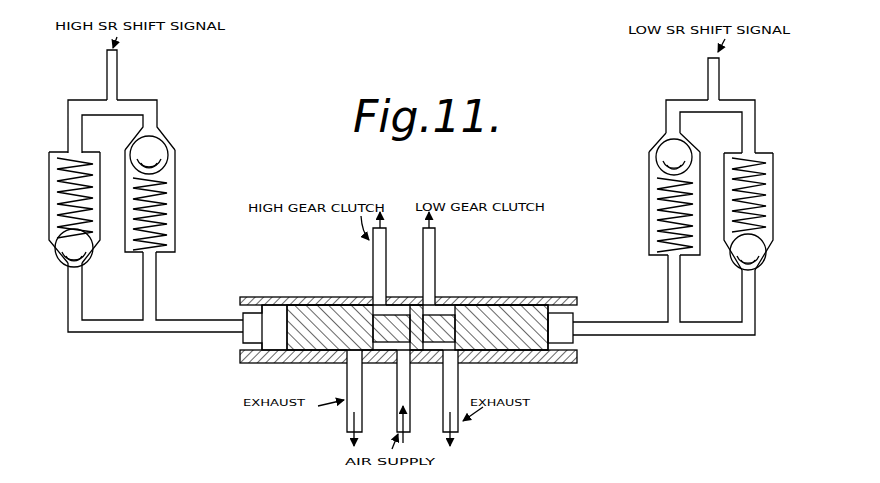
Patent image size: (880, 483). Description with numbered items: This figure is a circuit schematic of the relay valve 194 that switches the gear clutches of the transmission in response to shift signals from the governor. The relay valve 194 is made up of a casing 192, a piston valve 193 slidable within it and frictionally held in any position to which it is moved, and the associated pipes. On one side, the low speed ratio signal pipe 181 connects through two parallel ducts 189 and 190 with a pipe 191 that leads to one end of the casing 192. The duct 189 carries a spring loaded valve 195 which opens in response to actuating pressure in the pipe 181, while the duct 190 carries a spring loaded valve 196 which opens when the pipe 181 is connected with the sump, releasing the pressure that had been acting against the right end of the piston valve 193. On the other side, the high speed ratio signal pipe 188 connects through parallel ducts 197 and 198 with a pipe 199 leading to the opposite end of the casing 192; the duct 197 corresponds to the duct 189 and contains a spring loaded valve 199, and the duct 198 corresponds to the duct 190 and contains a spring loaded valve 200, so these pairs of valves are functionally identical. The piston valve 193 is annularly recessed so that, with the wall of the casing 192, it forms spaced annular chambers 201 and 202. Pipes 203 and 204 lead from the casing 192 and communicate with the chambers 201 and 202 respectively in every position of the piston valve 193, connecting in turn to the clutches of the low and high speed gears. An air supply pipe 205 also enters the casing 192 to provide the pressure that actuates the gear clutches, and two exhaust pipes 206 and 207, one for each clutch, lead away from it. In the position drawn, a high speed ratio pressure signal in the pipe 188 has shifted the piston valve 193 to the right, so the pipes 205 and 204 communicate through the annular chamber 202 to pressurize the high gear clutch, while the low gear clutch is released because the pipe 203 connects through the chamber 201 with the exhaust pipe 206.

The low speed ratio signal pipe 181 is at (706, 72).
The high speed ratio signal pipe 188 is at (118, 67).
The duct 189 is at (651, 190).
The duct 190 is at (769, 192).
The pipe 191 is at (641, 347).
The casing 192 is at (575, 307).
The piston valve 193 is at (511, 312).
The relay valve 194 is at (491, 229).
The spring loaded valve 195 is at (658, 157).
The spring loaded valve 196 is at (766, 252).
The duct 197 is at (177, 181).
The duct 198 is at (50, 152).
The pipe and spring loaded valve 199 is at (173, 147).
The spring loaded valve 200 is at (57, 260).
The annular chamber 201 is at (447, 302).
The annular chamber 202 is at (403, 303).
The pipe 203 is at (436, 265).
The pipe 204 is at (375, 269).
The air supply pipe 205 is at (430, 398).
The exhaust pipe 206 is at (459, 383).
The exhaust pipe 207 is at (362, 412).